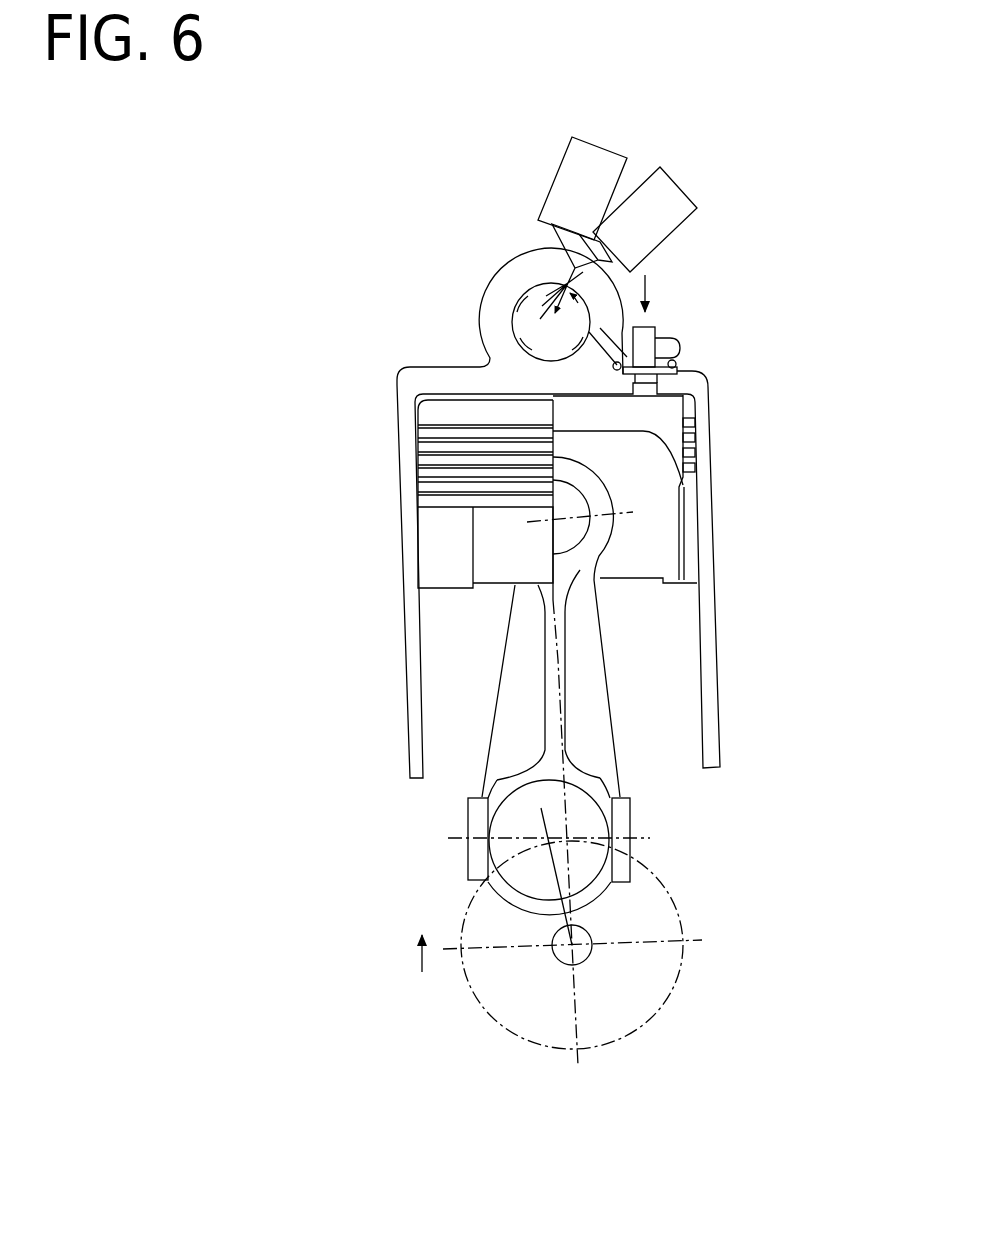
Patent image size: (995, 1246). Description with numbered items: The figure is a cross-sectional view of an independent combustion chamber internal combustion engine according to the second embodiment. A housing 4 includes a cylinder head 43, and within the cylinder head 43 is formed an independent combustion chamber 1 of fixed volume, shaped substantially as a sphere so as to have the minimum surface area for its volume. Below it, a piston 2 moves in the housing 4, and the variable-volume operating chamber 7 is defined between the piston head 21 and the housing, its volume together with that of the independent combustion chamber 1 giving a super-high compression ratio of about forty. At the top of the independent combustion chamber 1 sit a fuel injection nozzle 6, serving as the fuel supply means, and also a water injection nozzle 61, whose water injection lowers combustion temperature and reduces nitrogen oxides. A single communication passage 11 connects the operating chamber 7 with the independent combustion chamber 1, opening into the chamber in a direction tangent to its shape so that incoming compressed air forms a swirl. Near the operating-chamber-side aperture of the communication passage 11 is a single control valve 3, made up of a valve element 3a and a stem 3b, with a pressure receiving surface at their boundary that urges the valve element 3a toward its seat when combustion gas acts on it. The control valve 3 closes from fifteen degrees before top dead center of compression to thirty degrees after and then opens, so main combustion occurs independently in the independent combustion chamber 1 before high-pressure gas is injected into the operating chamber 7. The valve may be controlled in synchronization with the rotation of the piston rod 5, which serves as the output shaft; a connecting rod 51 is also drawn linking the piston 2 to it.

The independent combustion chamber 1 is at (483, 293).
The piston 2 is at (672, 410).
The piston head 21 is at (600, 396).
The control valve 3 is at (658, 347).
The valve element 3a is at (690, 375).
The stem 3b is at (682, 354).
The housing 4 is at (390, 448).
The cylinder head 43 is at (433, 377).
The piston rod 5 is at (650, 928).
The connecting rod 51 is at (588, 730).
The fuel injection nozzle 6 is at (668, 212).
The water injection nozzle 61 is at (562, 188).
The operating chamber 7 is at (577, 397).
The communication passage 11 is at (605, 330).